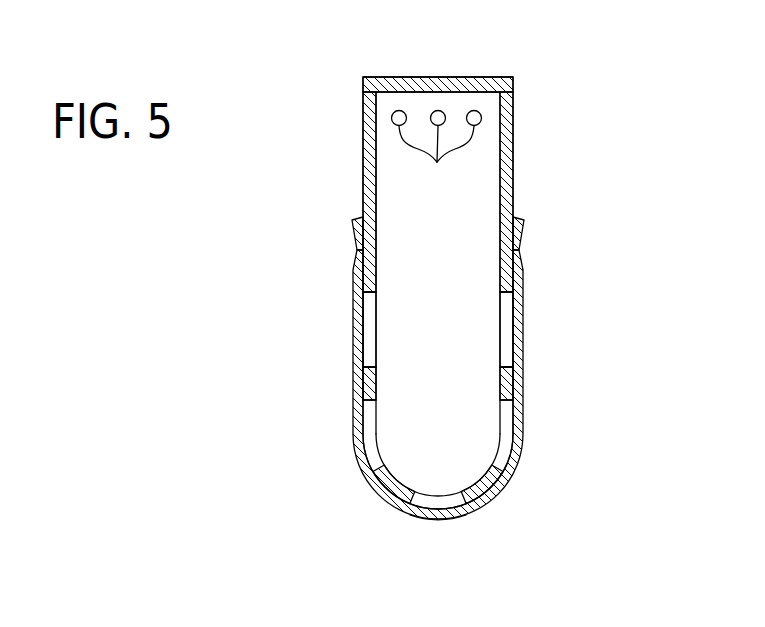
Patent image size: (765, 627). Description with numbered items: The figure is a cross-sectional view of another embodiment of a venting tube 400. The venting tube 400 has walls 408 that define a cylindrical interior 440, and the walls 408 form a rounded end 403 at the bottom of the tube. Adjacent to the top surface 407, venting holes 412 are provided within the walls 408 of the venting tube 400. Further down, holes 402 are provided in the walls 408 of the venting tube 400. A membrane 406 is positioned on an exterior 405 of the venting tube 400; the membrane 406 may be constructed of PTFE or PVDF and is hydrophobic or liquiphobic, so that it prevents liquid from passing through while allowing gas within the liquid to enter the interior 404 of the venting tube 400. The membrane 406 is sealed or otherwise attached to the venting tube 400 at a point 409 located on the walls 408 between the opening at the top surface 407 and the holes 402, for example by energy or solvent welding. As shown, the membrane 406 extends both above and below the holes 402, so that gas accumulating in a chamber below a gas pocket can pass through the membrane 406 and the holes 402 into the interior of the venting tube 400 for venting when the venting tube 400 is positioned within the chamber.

The venting tube 400 is at (326, 350).
The holes 402 is at (372, 335).
The rounded end 403 is at (452, 536).
The interior 404 is at (478, 458).
The exterior 405 is at (515, 283).
The membrane 406 is at (525, 386).
The top surface 407 is at (457, 77).
The walls 408 is at (363, 139).
The point 409 is at (357, 247).
The venting holes 412 is at (437, 150).
The cylindrical interior 440 is at (407, 217).